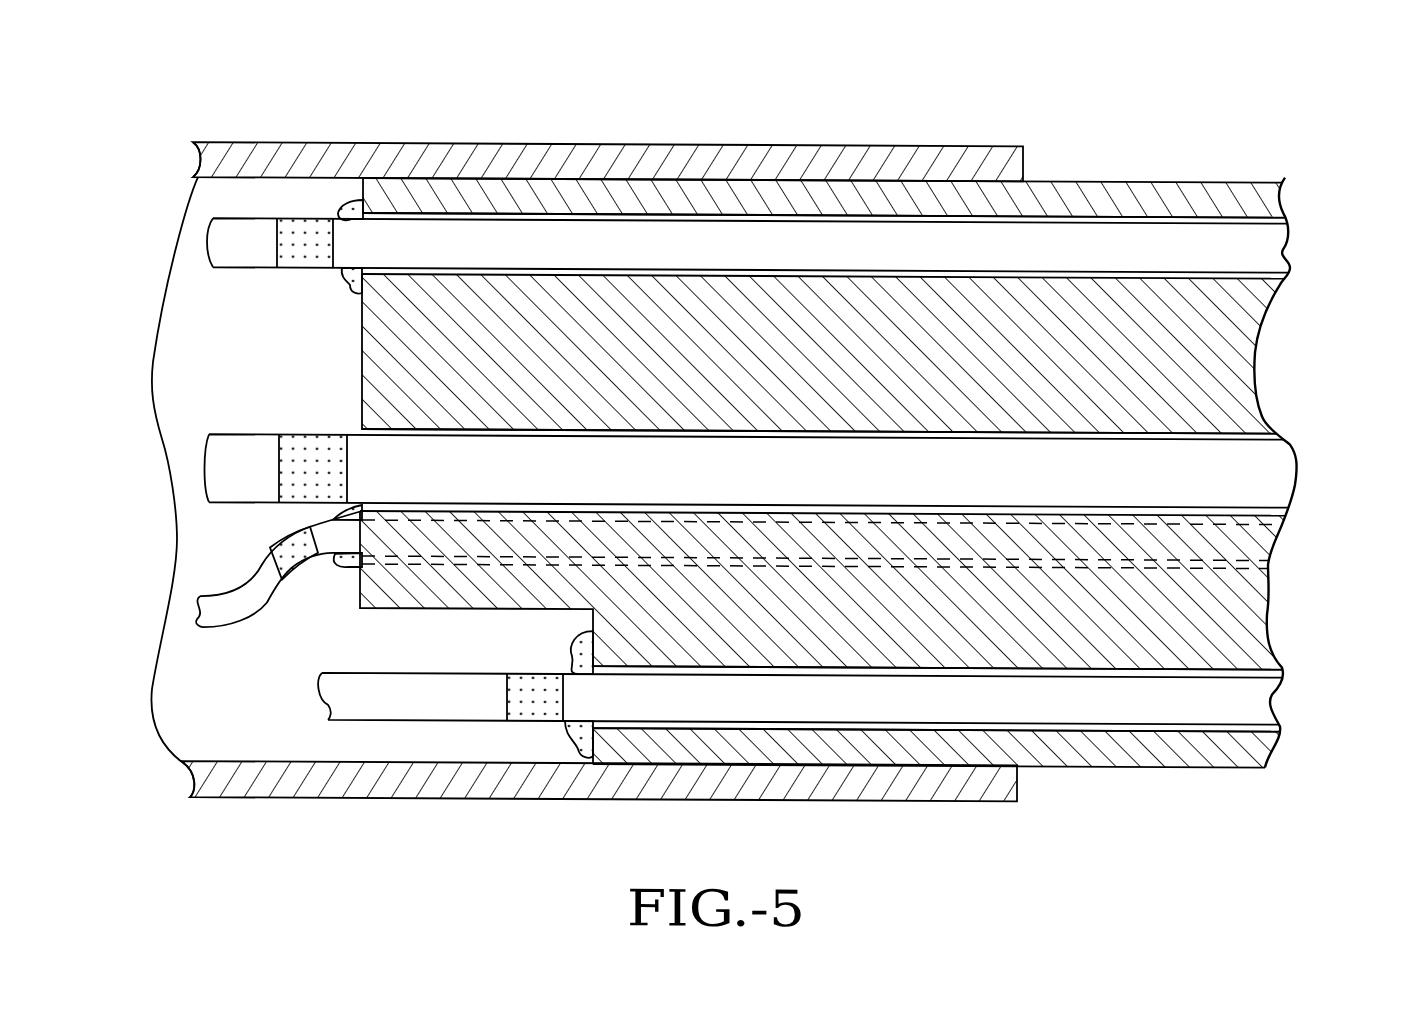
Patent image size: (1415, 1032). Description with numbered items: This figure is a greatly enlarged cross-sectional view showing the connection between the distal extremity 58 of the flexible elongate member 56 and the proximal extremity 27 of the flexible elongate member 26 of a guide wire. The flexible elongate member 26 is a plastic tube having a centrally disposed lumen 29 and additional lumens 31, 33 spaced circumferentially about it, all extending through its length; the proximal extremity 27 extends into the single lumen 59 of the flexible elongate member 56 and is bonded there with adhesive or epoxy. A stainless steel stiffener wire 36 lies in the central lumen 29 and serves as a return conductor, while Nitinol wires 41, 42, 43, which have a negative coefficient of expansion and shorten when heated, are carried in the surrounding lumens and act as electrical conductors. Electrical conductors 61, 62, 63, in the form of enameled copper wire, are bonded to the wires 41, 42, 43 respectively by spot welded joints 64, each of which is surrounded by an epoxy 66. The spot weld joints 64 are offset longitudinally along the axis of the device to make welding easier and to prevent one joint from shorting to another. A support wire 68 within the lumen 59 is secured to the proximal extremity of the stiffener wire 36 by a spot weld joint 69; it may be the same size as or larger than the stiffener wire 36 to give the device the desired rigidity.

The flexible elongate member 26 is at (1251, 150).
The proximal extremity 27 is at (847, 190).
The centrally disposed lumen 29 is at (1195, 503).
The lumen 31 is at (1222, 213).
The lumen 33 is at (1265, 588).
The stiffener wire 36 is at (1225, 457).
The wire 41 is at (1093, 240).
The wire 42 is at (1228, 697).
The wire 43 is at (1260, 553).
The flexible elongate member 56 is at (150, 148).
The distal extremity 58 is at (603, 158).
The lumen 59 is at (220, 183).
The electrical conductor 61 is at (245, 245).
The electrical conductor 62 is at (390, 698).
The electrical conductor 63 is at (228, 607).
The spot welded joint 64 is at (303, 240).
The epoxy 66 is at (352, 202).
The support wire 68 is at (243, 468).
The spot weld joint 69 is at (323, 455).